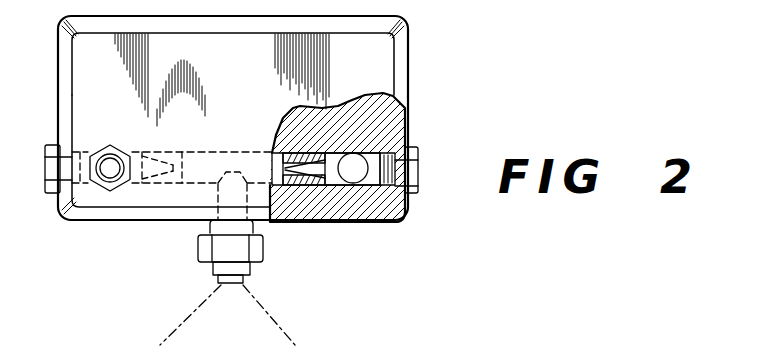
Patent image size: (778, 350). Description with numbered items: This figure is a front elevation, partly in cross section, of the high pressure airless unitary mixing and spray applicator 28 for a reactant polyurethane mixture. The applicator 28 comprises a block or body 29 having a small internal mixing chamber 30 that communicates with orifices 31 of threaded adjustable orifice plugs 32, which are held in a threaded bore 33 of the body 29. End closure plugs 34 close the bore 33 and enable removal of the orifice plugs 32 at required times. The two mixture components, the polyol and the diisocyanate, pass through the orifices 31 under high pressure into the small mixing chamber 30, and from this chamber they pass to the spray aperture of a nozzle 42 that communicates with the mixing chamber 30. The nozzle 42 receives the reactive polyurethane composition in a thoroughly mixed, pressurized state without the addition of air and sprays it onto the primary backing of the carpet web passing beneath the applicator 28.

The high pressure airless unitary mixing and spray applicator 28 is at (408, 72).
The block or body 29 is at (389, 126).
The internal mixing chamber 30 is at (219, 163).
The orifices 31 is at (158, 170).
The threaded adjustable orifice plugs 32 is at (170, 153).
The threaded bore 33 is at (357, 186).
The end closure plugs 34 is at (50, 172).
The nozzle 42 is at (213, 262).